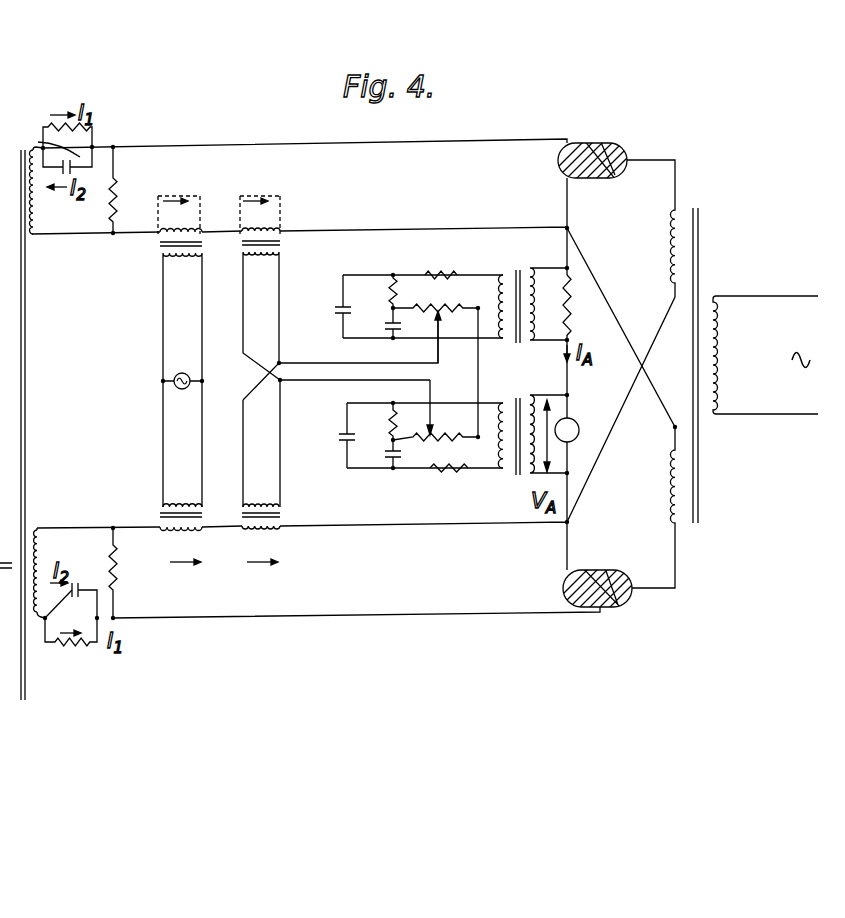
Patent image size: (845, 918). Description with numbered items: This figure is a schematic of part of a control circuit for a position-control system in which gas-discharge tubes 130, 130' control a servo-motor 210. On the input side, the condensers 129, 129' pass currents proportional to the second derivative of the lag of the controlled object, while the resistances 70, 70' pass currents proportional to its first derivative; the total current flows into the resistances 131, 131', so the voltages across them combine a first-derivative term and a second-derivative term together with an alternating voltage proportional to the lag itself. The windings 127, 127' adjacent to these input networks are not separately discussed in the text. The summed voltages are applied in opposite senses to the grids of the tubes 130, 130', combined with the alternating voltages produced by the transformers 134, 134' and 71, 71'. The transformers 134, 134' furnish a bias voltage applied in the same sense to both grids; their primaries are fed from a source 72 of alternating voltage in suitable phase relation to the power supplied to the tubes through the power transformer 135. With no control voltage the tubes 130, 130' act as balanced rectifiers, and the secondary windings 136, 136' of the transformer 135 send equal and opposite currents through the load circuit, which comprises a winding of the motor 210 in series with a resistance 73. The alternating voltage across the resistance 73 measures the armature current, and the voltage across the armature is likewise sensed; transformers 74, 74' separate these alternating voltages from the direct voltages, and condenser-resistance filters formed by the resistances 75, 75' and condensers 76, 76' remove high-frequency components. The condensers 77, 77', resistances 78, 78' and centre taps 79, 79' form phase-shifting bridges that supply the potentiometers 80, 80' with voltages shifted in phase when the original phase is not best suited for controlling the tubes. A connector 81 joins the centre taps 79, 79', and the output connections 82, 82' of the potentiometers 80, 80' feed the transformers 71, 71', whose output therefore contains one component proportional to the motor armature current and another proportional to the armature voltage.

The resistance 70 is at (84, 151).
The resistance 70' is at (71, 627).
The transformer 71 is at (260, 286).
The transformer 71' is at (265, 549).
The source 72 is at (182, 394).
The resistance 73 is at (566, 323).
The transformer 74 is at (511, 295).
The transformer 74' is at (517, 448).
The filter resistance 75 is at (442, 263).
The filter resistance 75' is at (451, 481).
The filter condenser 76 is at (329, 310).
The filter condenser 76' is at (331, 442).
The condenser 77 is at (379, 325).
The condenser 77' is at (378, 474).
The resistance 78 is at (378, 291).
The resistance 78' is at (377, 410).
The centre tap 79 is at (517, 304).
The centre tap 79' is at (518, 434).
The potentiometer 80 is at (435, 296).
The potentiometer 80' is at (435, 450).
The connector 81 is at (479, 382).
The output connection 82 is at (455, 340).
The output connection 82' is at (453, 401).
The transformer winding 127 is at (58, 190).
The transformer winding (second unit) 127' is at (62, 573).
The condenser 129 is at (42, 139).
The condenser 129' is at (38, 621).
The gas-discharge tube 130 is at (595, 151).
The gas-discharge tube 130' is at (601, 599).
The resistance 131 is at (136, 190).
The resistance 131' is at (140, 573).
The transformer 134 is at (181, 277).
The transformer 134' is at (189, 549).
The power transformer 135 is at (730, 266).
The secondary winding 136 is at (621, 341).
The secondary winding 136' is at (624, 408).
The motor 210 is at (612, 431).